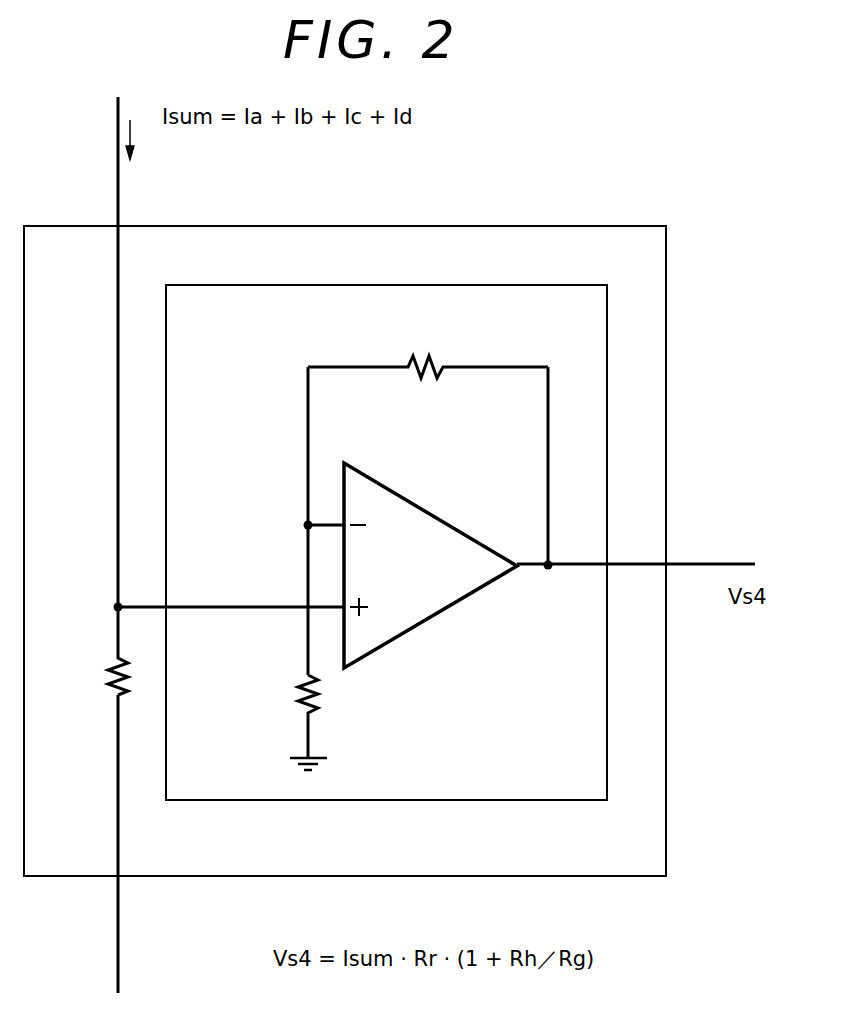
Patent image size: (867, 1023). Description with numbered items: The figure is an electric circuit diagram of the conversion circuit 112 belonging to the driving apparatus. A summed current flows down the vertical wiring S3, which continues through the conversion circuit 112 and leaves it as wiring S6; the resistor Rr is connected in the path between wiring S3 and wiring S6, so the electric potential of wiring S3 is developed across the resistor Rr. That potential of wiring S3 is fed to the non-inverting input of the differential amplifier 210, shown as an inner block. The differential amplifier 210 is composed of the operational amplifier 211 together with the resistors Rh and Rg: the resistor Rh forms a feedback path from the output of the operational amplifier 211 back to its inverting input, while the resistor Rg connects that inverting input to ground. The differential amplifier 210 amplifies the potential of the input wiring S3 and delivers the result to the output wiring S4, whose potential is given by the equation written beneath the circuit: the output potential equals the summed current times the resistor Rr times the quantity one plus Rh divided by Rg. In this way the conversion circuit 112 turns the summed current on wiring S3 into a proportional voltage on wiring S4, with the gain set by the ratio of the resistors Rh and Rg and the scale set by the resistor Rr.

The conversion circuit 112 is at (583, 226).
The differential amplifier 210 is at (549, 285).
The operational amplifier 211 is at (424, 502).
The wiring S3 is at (118, 200).
The wiring S4 is at (703, 563).
The wiring S6 is at (118, 948).
The resistor Rr is at (108, 688).
The resistor Rh is at (428, 350).
The resistor Rg is at (322, 698).